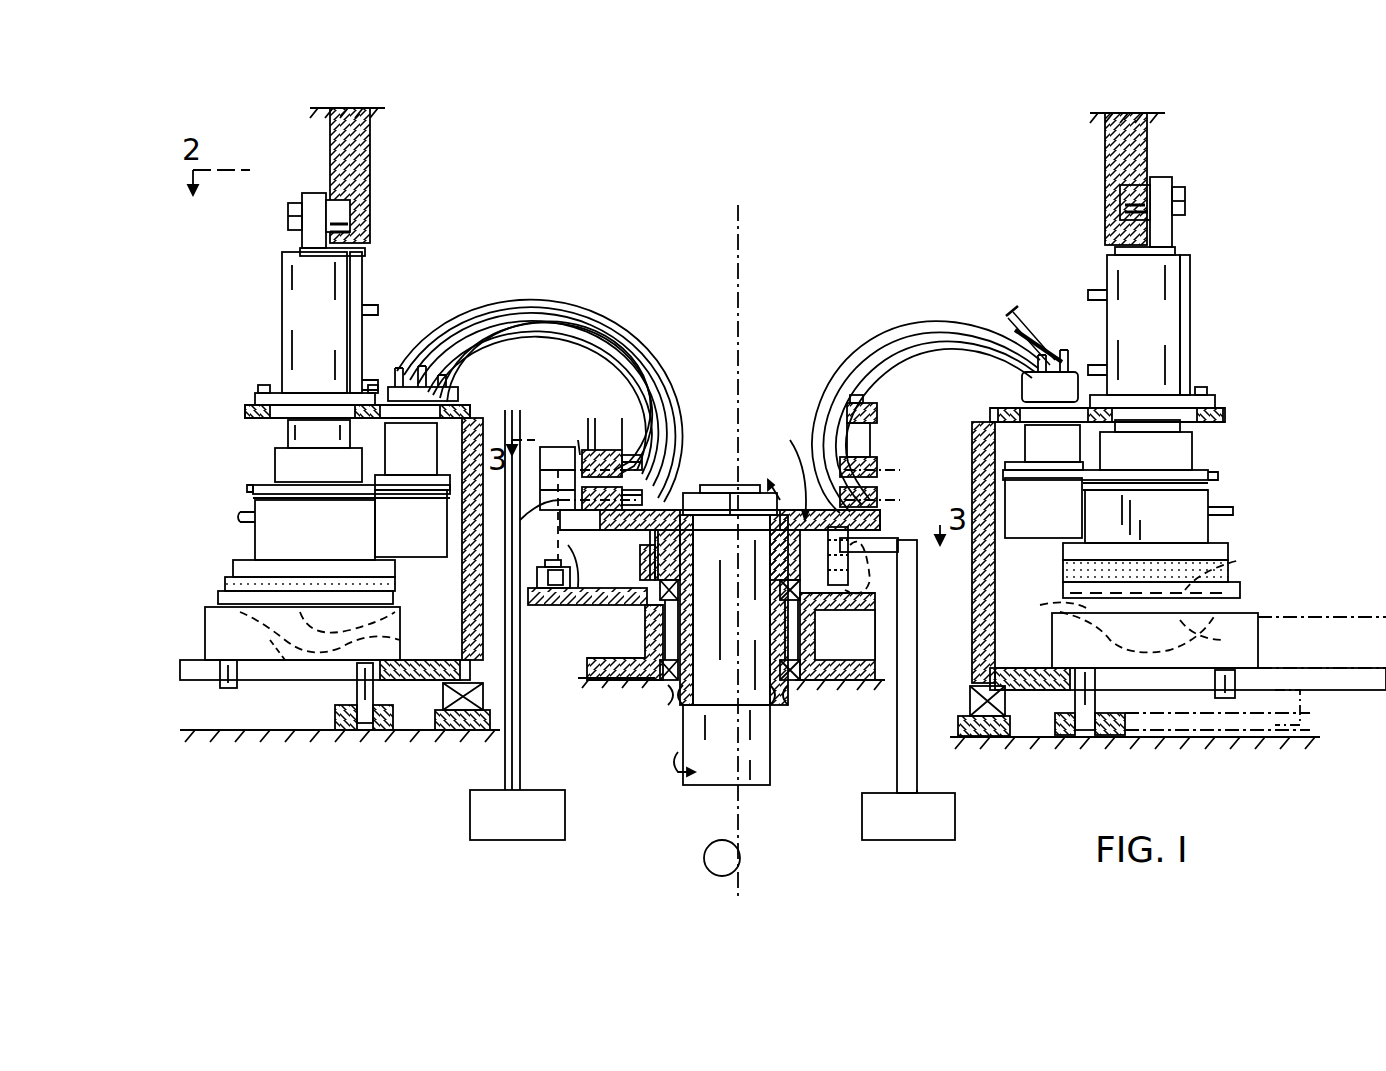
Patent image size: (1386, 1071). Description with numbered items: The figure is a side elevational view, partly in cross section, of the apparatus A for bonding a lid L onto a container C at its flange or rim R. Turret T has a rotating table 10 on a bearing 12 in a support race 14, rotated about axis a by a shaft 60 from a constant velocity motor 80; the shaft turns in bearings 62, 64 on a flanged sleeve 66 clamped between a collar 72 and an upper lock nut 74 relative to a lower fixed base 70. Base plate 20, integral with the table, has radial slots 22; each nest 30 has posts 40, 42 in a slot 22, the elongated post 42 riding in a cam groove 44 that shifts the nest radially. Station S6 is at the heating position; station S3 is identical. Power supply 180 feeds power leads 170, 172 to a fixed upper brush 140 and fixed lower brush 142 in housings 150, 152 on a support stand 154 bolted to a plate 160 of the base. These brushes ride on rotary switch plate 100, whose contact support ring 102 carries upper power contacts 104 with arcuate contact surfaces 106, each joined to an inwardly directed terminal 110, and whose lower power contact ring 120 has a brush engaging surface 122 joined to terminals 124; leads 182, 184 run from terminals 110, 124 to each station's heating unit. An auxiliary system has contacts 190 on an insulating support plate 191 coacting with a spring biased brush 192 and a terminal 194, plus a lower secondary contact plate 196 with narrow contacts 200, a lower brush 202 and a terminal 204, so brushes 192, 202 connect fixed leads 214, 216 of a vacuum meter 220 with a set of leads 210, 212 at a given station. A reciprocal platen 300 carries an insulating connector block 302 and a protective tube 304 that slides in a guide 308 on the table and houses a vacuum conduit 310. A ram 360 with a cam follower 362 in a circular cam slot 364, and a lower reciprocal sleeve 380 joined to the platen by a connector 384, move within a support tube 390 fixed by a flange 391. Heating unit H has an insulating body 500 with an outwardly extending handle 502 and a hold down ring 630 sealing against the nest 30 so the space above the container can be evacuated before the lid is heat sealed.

The rotating table 10 is at (477, 398).
The bearing 12 is at (445, 725).
The support race 14 is at (455, 730).
The base plate 20 is at (300, 683).
The radially extending slot 22 is at (262, 672).
The container supporting nest 30 is at (398, 615).
The post 40 is at (228, 690).
The post 42 is at (365, 703).
The cam groove 44 is at (370, 732).
The shaft 60 is at (765, 765).
The bearing 62 is at (650, 625).
The bearing 64 is at (668, 697).
The flanged sleeve 66 is at (630, 590).
The lower fixed base 70 is at (808, 653).
The collar 72 is at (785, 700).
The upper lock nut 74 is at (740, 500).
The constant velocity motor 80 is at (742, 858).
The rotary switch plate 100 is at (632, 470).
The contact support ring 102 is at (605, 445).
The upper power contact 104 is at (545, 467).
The brush supporting contact surface 106 is at (578, 455).
The terminal 110 is at (862, 460).
The lower power contact ring 120 is at (625, 505).
The brush engaging surface 122 is at (865, 480).
The terminal 124 is at (950, 520).
The fixed upper brush 140 is at (588, 420).
The fixed lower brush 142 is at (548, 515).
The brush housing 150 is at (545, 450).
The brush housing 152 is at (520, 520).
The fixed support stand 154 is at (578, 602).
The plate 160 is at (555, 600).
The power lead 170 is at (520, 727).
The power lead 172 is at (520, 762).
The power supply 180 is at (565, 810).
The lead 182 is at (575, 330).
The lead 184 is at (550, 300).
The contact 190 is at (800, 455).
The support plate 191 is at (591, 569).
The spring bias brush 192 is at (850, 552).
The terminal 194 is at (650, 535).
The lower secondary contact plate 196 is at (700, 545).
The narrow contact 200 is at (734, 610).
The lower spring biased brush 202 is at (868, 622).
The terminal 204 is at (720, 544).
The lead 210 is at (470, 330).
The lead 212 is at (497, 290).
The fixed lead 214 is at (898, 748).
The fixed lead 216 is at (917, 760).
The vacuum meter 220 is at (925, 840).
The reciprocal platen 300 is at (267, 485).
The connector block 302 is at (728, 517).
The protective tube 304 is at (729, 456).
The guide 308 is at (458, 402).
The conduit 310 is at (1035, 362).
The ram 360 is at (318, 195).
The cam follower 362 is at (337, 215).
The circular cam slot 364 is at (347, 230).
The lower reciprocal sleeve 380 is at (293, 432).
The connector block 384 is at (282, 457).
The support tube 390 is at (290, 300).
The flange 391 is at (258, 398).
The body 500 is at (262, 538).
The stub shaft 502 is at (1233, 512).
The hold down ring 630 is at (225, 597).
The heating unit H is at (243, 510).
The container C is at (738, 633).
The lid L is at (1252, 545).
The flange R is at (1050, 616).
The turret T is at (862, 322).
The apparatus A is at (555, 178).
The heating station S6 is at (395, 292).
The heating station S3 is at (1222, 348).
The axis a is at (738, 248).